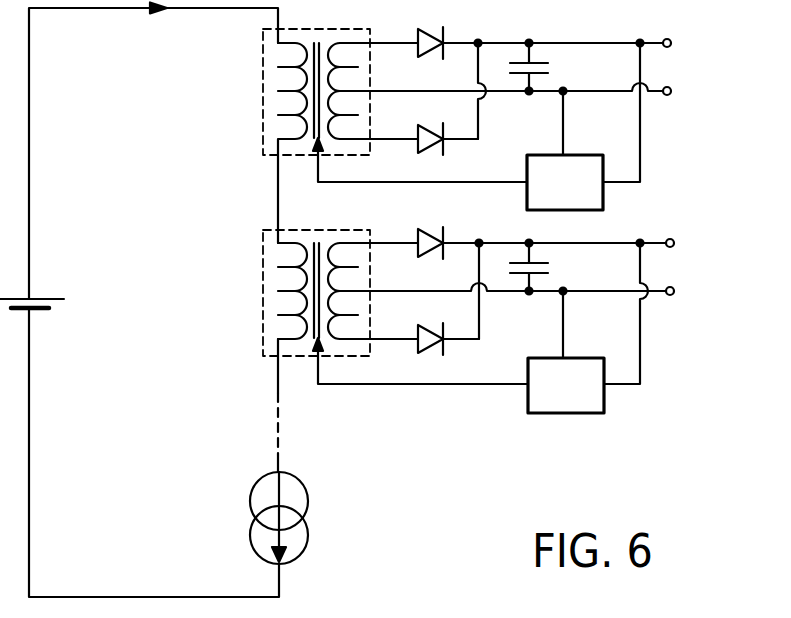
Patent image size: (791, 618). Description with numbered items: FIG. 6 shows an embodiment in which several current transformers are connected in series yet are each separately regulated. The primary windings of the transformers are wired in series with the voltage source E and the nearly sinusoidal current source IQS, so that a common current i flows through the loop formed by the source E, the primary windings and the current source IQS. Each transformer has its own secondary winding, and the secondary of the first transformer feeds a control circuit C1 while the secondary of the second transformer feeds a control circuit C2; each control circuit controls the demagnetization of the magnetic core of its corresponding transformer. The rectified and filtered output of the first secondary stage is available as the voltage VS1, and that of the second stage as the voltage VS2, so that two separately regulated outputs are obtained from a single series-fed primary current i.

The voltage source E is at (32, 287).
The primary current i is at (150, 24).
The control circuit C1 is at (565, 182).
The control circuit C2 is at (566, 385).
The first output voltage VS1 is at (684, 52).
The second output voltage VS2 is at (696, 267).
The nearly sinusoidal current source IQS is at (303, 518).